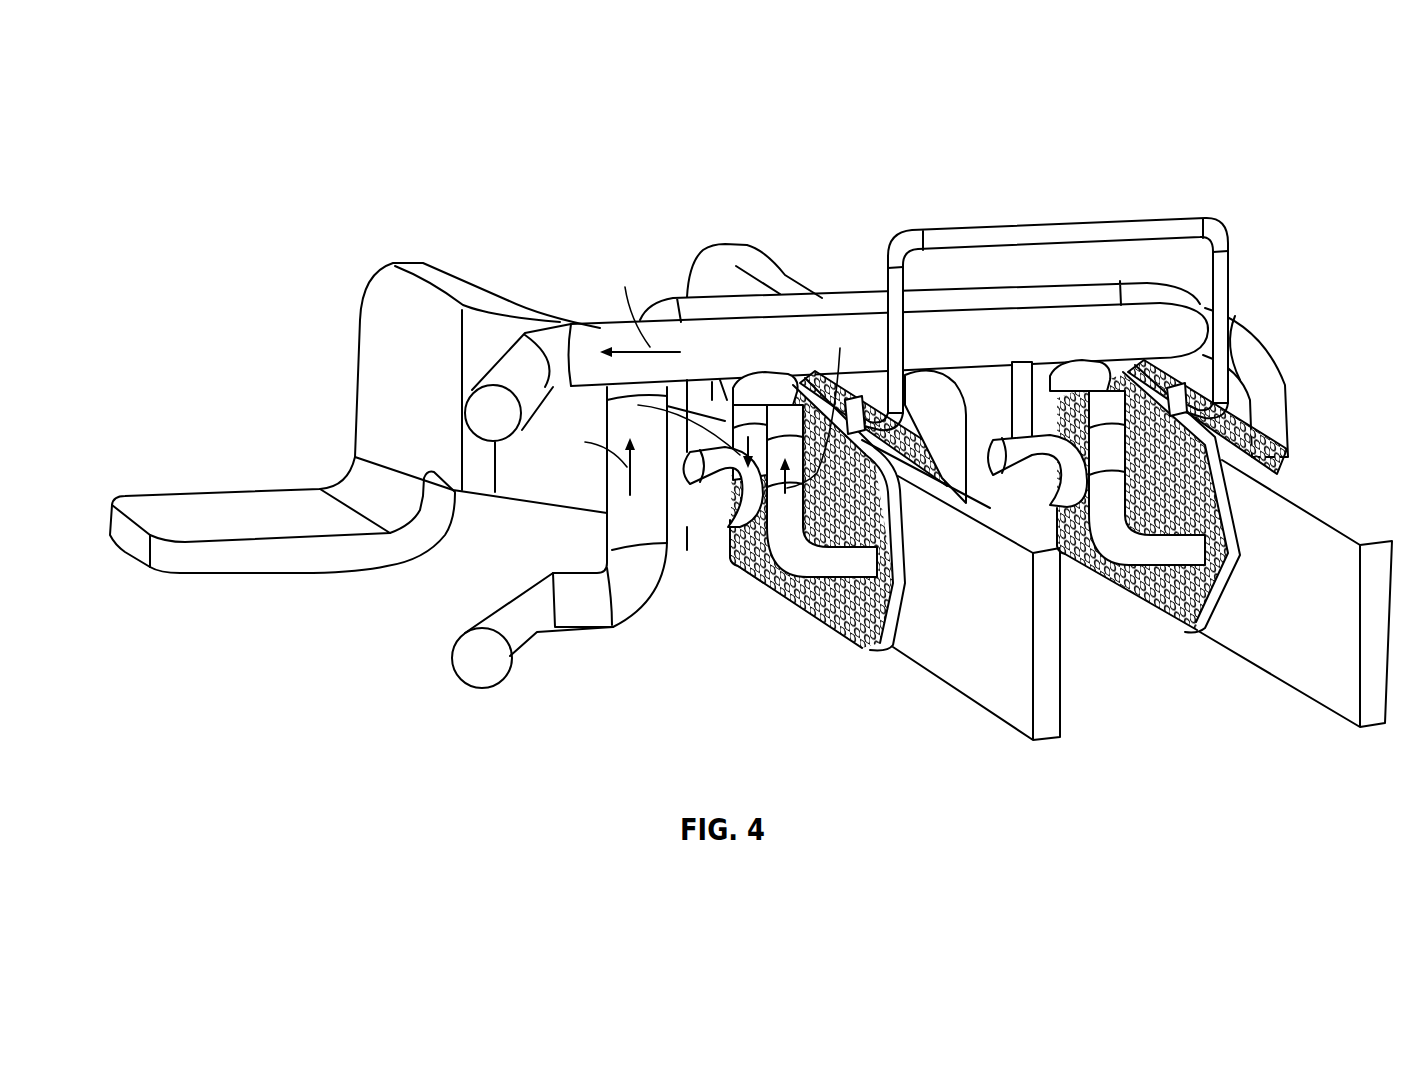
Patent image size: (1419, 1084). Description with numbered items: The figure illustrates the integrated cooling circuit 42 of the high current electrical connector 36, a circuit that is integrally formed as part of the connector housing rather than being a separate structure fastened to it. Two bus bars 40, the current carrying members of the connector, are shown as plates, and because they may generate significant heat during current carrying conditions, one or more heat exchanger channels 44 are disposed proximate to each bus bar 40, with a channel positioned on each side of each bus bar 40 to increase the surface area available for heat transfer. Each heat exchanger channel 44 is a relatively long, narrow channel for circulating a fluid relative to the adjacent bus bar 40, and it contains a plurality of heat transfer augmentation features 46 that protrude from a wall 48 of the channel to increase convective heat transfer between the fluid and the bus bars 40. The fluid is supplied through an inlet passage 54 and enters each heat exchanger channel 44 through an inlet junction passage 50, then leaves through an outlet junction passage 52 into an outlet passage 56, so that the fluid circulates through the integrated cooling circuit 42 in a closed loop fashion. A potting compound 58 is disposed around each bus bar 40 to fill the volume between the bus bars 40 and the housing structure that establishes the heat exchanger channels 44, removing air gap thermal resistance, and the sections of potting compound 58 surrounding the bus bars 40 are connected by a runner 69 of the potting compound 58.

The high current electrical connector 36 is at (930, 184).
The bus bar 40 is at (1007, 712).
The integrated cooling circuit 42 is at (1268, 318).
The heat exchanger channel 44 is at (742, 587).
The heat transfer augmentation feature 46 is at (787, 607).
The wall 48 is at (850, 645).
The inlet junction passage 50 is at (707, 488).
The outlet junction passage 52 is at (867, 577).
The inlet passage 54 is at (832, 300).
The outlet passage 56 is at (703, 343).
The potting compound 58 is at (900, 610).
The runner 69 is at (1058, 233).